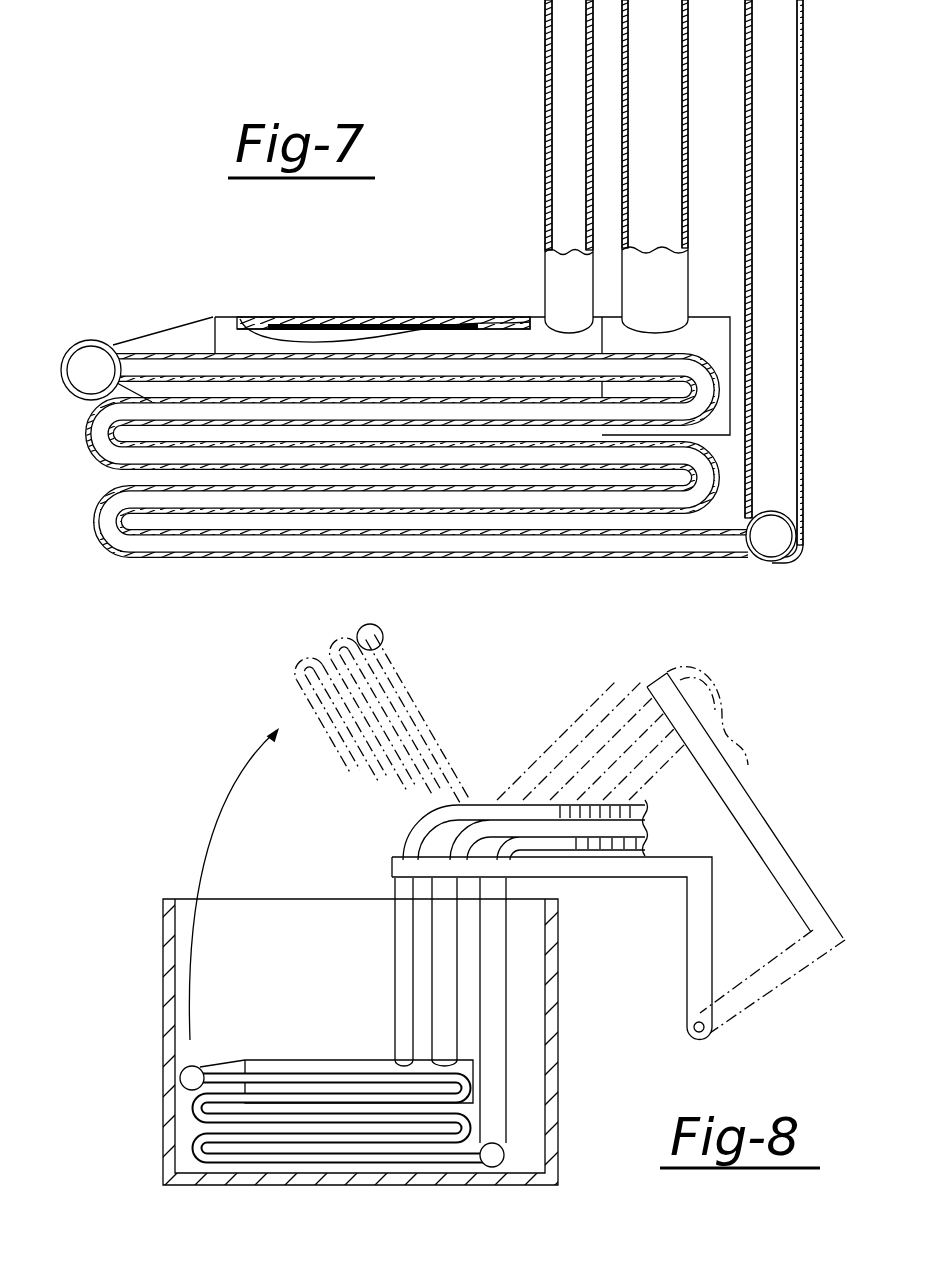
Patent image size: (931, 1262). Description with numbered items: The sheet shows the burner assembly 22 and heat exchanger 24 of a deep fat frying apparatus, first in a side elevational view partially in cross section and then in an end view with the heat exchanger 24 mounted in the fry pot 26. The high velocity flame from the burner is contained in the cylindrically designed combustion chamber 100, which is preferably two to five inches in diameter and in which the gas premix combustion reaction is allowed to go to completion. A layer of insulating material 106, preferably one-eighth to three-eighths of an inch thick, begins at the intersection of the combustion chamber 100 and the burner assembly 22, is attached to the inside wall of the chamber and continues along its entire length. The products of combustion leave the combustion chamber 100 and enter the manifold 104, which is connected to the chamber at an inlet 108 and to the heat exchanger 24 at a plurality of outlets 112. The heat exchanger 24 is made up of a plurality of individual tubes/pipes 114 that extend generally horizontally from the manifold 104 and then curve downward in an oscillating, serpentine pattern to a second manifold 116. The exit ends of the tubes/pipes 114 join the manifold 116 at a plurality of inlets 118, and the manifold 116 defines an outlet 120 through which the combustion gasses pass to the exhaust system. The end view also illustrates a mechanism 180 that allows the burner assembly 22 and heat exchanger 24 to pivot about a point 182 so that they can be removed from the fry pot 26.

In FIG. 7, the burner assembly 22 is at (695, 343).
In FIG. 8, the burner assembly 22 is at (475, 1052).
In FIG. 7, the heat exchanger 24 is at (230, 566).
In FIG. 8, the heat exchanger 24 is at (253, 1082).
In FIG. 8, the fry pot 26 is at (548, 1118).
In FIG. 7, the combustion chamber 100 is at (382, 353).
In FIG. 7, the manifold 104 is at (92, 342).
In FIG. 7, the insulating material 106 is at (335, 322).
In FIG. 7, the inlet 108 is at (160, 347).
In FIG. 7, the outlets 112 is at (132, 369).
In FIG. 7, the tubes/pipes 114 is at (440, 562).
In FIG. 7, the manifold 116 is at (770, 563).
In FIG. 7, the inlets 118 is at (718, 555).
In FIG. 7, the outlet 120 is at (786, 520).
In FIG. 8, the mechanism 180 is at (590, 870).
In FIG. 8, the point 182 is at (707, 1033).